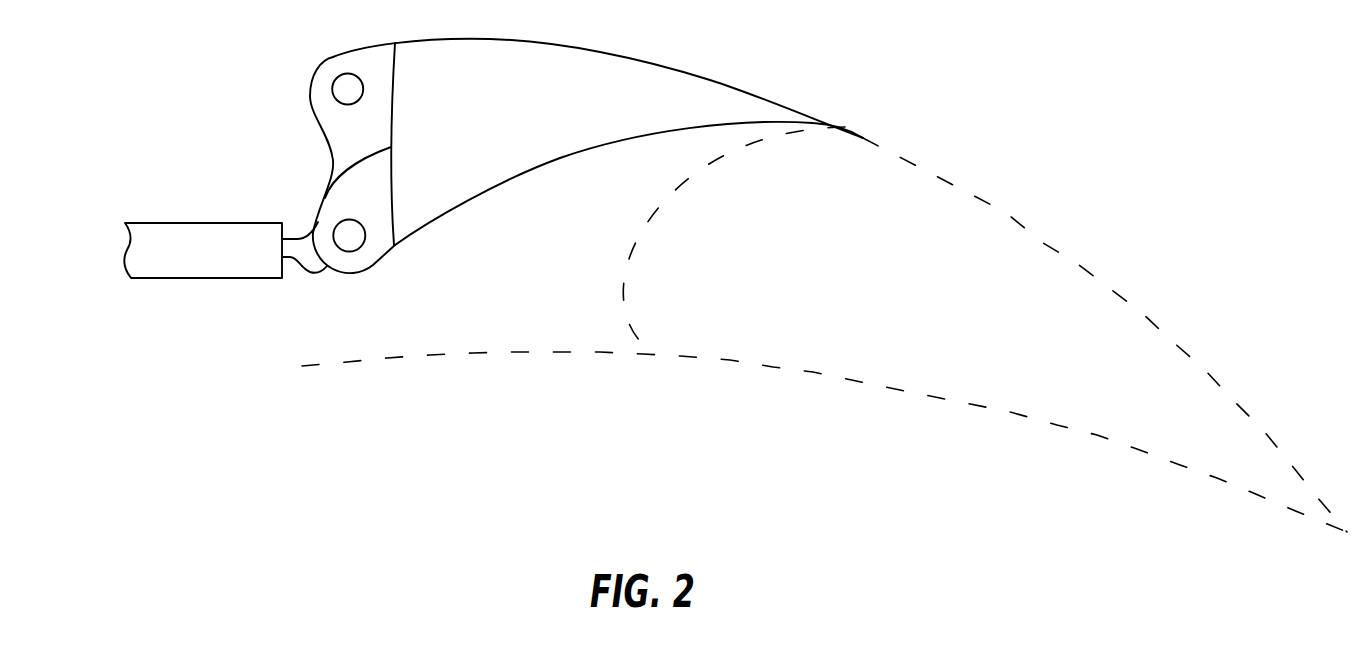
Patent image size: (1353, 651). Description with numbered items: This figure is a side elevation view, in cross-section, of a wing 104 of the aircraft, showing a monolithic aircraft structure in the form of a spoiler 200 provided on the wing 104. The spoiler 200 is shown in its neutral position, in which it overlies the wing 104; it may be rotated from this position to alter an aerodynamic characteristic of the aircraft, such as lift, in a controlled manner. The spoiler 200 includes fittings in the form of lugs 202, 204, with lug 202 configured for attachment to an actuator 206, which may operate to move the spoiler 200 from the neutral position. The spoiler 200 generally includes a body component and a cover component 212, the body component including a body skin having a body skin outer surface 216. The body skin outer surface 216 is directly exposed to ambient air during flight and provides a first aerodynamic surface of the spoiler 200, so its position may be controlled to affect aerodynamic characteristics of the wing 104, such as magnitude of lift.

The wing 104 is at (935, 193).
The spoiler 200 is at (560, 168).
The lug 202 is at (367, 257).
The lug 204 is at (323, 85).
The actuator 206 is at (203, 237).
The cover component 212 is at (547, 163).
The body skin outer surface 216 is at (568, 43).